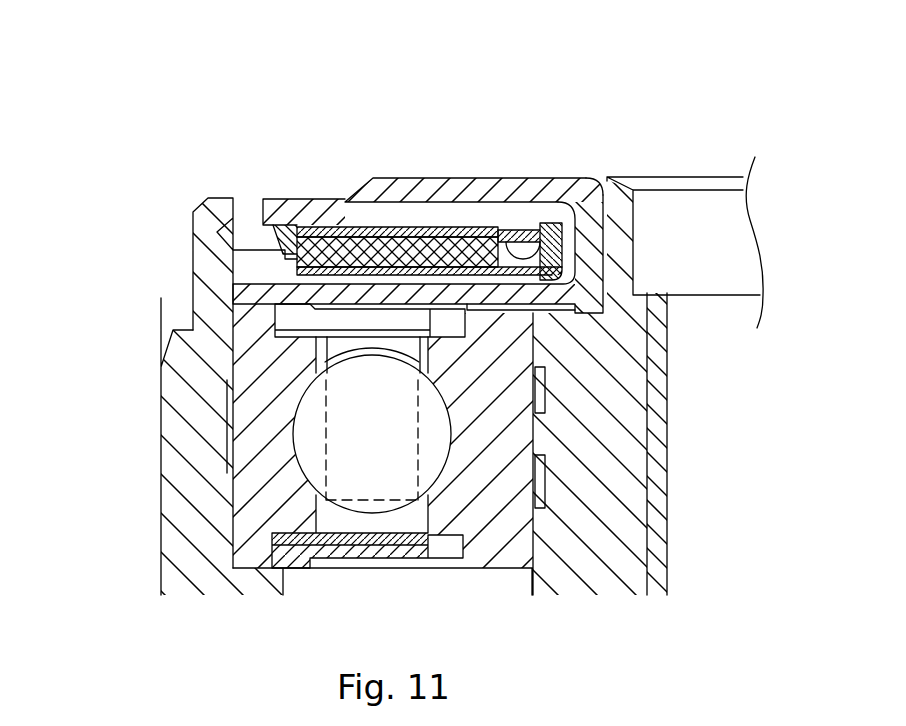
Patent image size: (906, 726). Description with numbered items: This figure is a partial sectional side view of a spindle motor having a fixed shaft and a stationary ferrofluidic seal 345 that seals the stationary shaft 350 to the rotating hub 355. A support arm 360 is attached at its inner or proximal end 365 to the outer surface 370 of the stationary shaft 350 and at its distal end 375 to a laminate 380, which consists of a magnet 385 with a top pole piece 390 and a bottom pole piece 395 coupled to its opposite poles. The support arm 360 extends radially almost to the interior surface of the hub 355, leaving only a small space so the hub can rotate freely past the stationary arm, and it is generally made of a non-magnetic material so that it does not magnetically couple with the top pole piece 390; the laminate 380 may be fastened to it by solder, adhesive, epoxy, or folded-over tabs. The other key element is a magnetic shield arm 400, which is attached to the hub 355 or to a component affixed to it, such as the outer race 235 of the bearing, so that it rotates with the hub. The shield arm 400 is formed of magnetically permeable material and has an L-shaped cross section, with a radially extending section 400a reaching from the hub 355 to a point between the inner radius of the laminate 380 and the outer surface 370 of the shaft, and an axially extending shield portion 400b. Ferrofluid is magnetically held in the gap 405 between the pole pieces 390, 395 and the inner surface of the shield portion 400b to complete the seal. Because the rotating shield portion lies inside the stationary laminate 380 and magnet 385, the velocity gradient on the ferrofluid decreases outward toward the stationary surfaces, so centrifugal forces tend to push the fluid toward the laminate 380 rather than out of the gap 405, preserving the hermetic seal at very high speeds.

The outer race 235 is at (250, 424).
The stationary ferrofluidic seal 345 is at (345, 135).
The stationary shaft 350 is at (628, 172).
The rotating hub 355 is at (222, 236).
The support arm 360 is at (438, 200).
The proximal end 365 is at (585, 203).
The outer surface 370 is at (613, 165).
The distal end 375 is at (285, 210).
The laminate 380 is at (258, 272).
The magnet 385 is at (328, 234).
The top pole piece 390 is at (366, 210).
The bottom pole piece 395 is at (404, 232).
The magnetic shield arm 400 is at (455, 282).
The radially extending section 400a is at (498, 245).
The axially extending shield portion 400b is at (556, 245).
The gap 405 is at (536, 235).